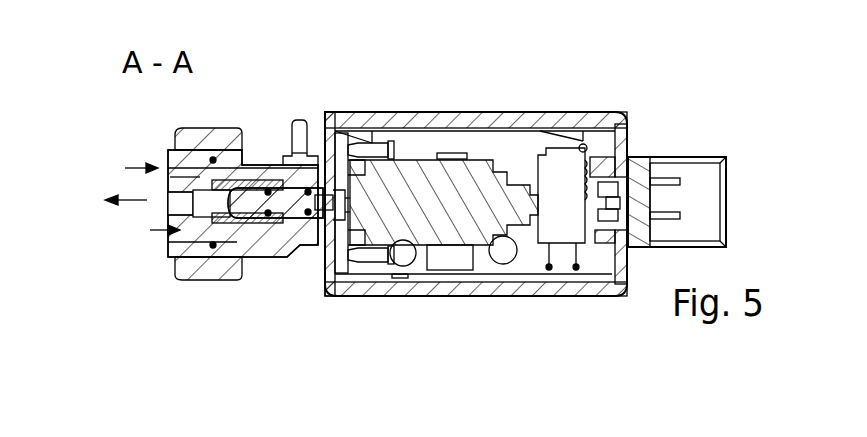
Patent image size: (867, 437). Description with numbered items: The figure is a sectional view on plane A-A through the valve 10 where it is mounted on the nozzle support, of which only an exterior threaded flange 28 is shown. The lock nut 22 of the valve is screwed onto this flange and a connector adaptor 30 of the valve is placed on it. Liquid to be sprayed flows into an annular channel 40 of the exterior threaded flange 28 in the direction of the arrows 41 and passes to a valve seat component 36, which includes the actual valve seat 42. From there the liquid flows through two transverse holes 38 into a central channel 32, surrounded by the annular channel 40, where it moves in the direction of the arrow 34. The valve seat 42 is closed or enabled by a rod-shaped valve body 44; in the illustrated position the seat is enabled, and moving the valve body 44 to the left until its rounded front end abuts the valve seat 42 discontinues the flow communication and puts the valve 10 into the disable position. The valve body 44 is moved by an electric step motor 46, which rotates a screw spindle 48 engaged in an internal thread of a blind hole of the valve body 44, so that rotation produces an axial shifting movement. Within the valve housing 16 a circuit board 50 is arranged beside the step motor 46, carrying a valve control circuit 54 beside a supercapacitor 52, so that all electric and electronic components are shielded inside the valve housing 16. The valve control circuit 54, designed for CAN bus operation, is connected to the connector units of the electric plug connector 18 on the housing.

The valve 10 is at (476, 153).
The valve housing 16 is at (597, 117).
The electric plug connector 18 is at (665, 160).
The lock nut 22 is at (203, 140).
The exterior threaded flange 28 is at (222, 199).
The connector adaptor 30 is at (273, 237).
The central channel 32 is at (180, 207).
The arrow 34 is at (125, 198).
The valve seat component 36 is at (223, 176).
The transverse holes 38 is at (240, 180).
The annular channel 40 is at (177, 177).
The arrows 41 is at (130, 168).
The valve seat 42 is at (250, 225).
The valve body 44 is at (293, 210).
The step motor 46 is at (472, 232).
The screw spindle 48 is at (335, 130).
The circuit board 50 is at (512, 150).
The supercapacitor 52 is at (565, 235).
The valve control circuit 54 is at (450, 142).